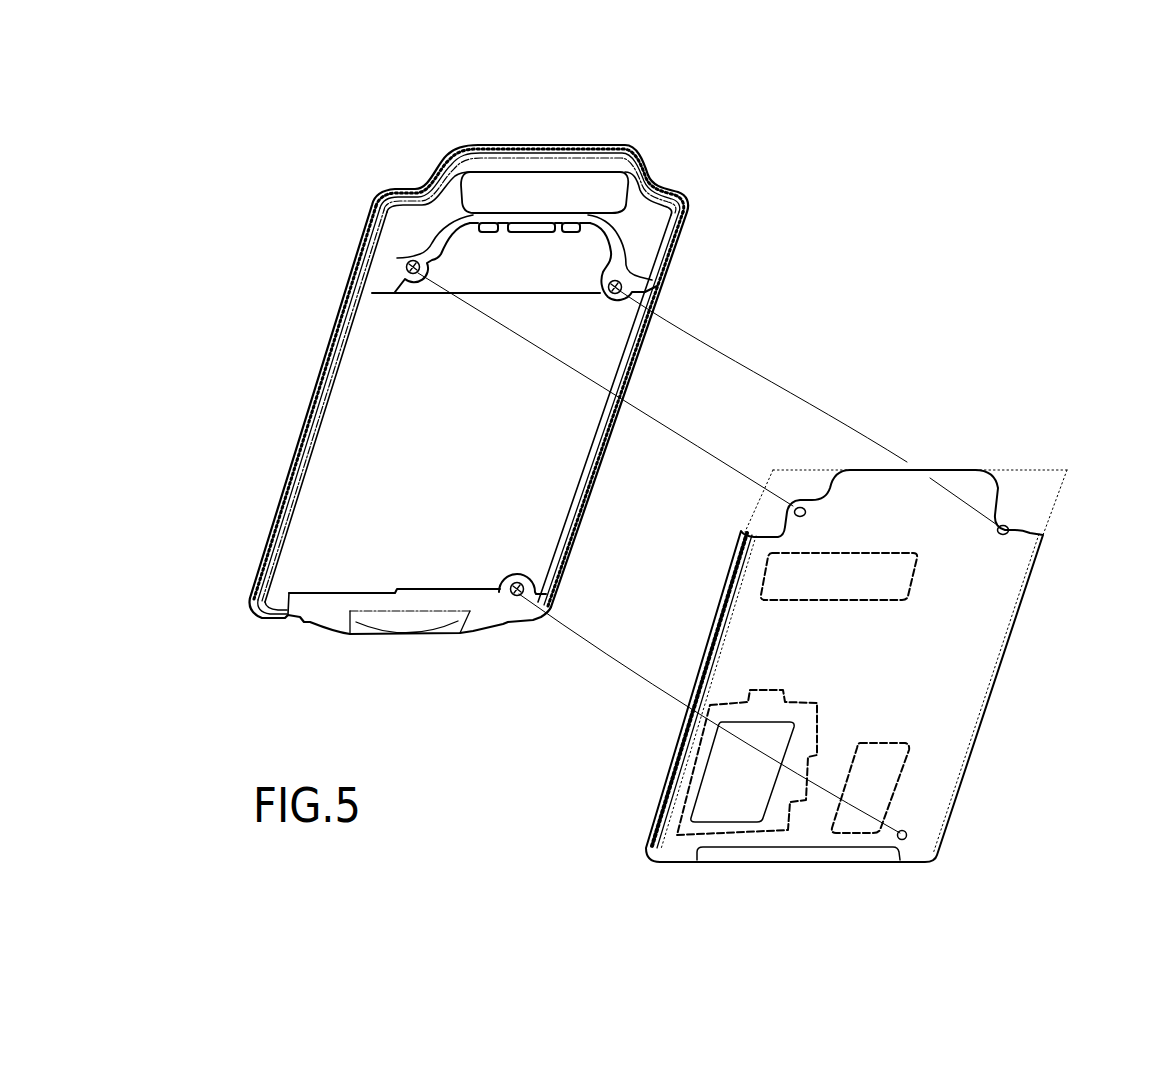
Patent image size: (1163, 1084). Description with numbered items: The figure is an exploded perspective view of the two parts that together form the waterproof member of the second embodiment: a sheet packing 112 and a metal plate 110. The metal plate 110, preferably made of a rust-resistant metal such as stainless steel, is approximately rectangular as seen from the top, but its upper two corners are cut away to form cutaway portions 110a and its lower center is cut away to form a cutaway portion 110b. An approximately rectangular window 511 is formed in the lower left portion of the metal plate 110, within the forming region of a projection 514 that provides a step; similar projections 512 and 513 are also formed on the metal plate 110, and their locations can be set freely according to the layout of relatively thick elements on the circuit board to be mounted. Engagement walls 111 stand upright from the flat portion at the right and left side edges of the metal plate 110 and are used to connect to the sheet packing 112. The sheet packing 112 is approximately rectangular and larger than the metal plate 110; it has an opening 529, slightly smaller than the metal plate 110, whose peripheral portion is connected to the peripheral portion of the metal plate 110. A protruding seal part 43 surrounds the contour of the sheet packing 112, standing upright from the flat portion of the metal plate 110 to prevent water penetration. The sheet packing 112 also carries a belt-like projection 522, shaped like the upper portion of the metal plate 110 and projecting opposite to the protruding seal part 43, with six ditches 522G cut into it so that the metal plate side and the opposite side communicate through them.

The protruding seal part 43 is at (278, 508).
The sheet packing 112 is at (377, 197).
The opening 529 is at (488, 435).
The belt-like projection 522 is at (547, 222).
The ditches 522G is at (430, 178).
The metal plate 110 is at (980, 470).
The cutaway portions 110a is at (788, 486).
The cutaway portion 110b is at (795, 850).
The engagement walls 111 is at (657, 797).
The window 511 is at (737, 722).
The projection 512 is at (803, 573).
The projection 513 is at (877, 767).
The projection 514 is at (682, 822).